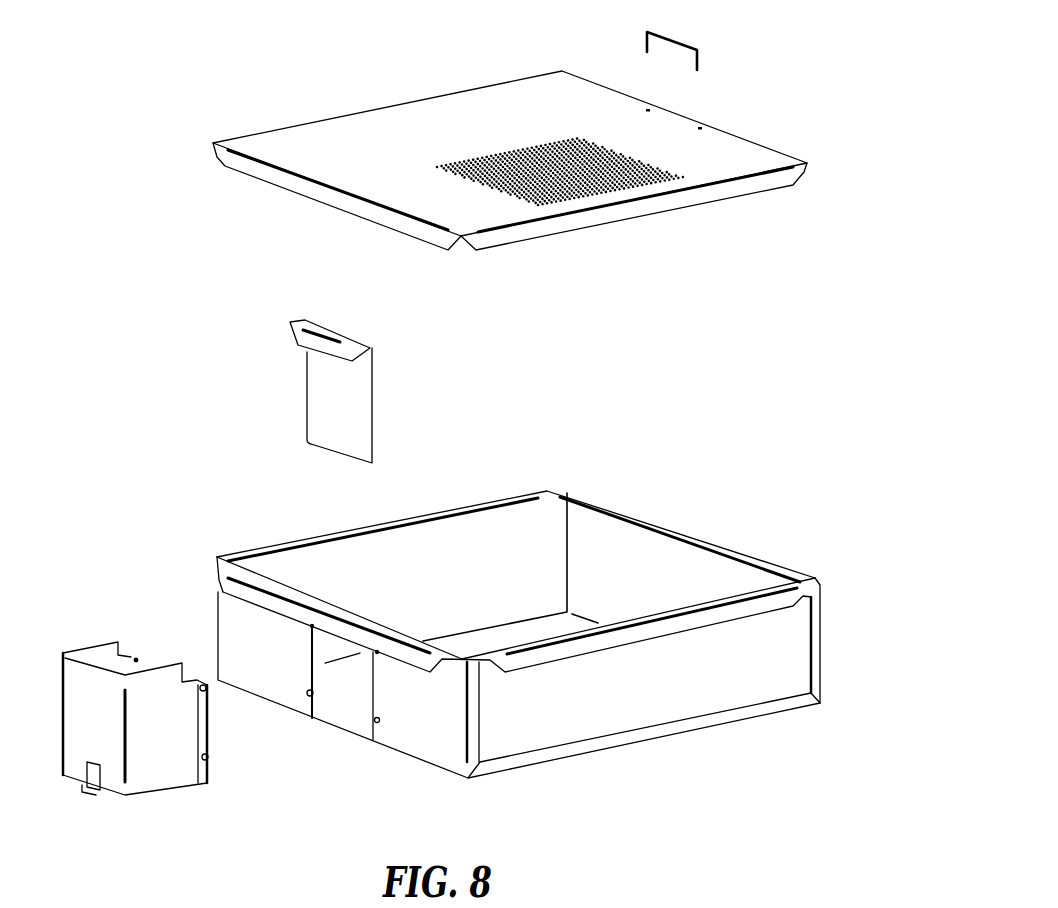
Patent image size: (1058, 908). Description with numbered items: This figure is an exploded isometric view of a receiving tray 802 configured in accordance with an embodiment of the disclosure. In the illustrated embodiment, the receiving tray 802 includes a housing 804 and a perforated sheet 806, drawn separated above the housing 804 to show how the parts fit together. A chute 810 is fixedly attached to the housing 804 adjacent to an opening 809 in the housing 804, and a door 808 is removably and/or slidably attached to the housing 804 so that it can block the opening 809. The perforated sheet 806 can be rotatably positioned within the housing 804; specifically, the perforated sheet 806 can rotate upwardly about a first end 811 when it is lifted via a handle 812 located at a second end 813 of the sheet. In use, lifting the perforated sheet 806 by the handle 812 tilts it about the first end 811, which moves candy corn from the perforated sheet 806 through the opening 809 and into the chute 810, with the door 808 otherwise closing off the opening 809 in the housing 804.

The receiving tray 802 is at (133, 319).
The housing 804 is at (552, 635).
The perforated sheet 806 is at (515, 160).
The door 808 is at (358, 396).
The opening 809 is at (346, 720).
The chute 810 is at (158, 790).
The first end 811 is at (292, 183).
The handle 812 is at (684, 48).
The second end 813 is at (712, 140).